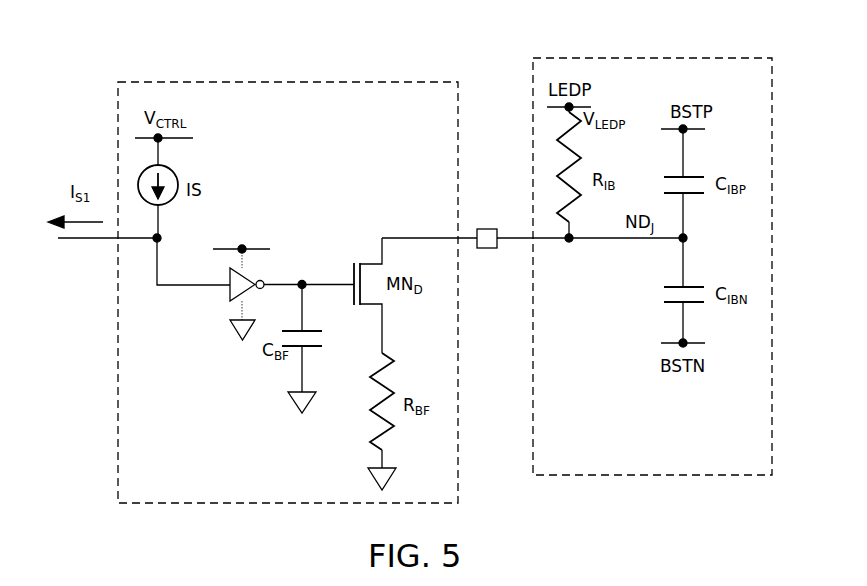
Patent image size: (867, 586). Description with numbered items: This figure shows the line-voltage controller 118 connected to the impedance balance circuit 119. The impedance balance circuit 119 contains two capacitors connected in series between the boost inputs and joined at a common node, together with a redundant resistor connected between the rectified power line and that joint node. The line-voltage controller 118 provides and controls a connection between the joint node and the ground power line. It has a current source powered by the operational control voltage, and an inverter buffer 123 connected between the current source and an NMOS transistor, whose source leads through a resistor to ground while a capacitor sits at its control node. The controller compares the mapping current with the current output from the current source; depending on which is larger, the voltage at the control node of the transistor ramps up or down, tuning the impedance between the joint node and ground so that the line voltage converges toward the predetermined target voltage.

The line-voltage controller 118 is at (434, 143).
The impedance balance circuit 119 is at (638, 58).
The inverter buffer 123 is at (232, 280).